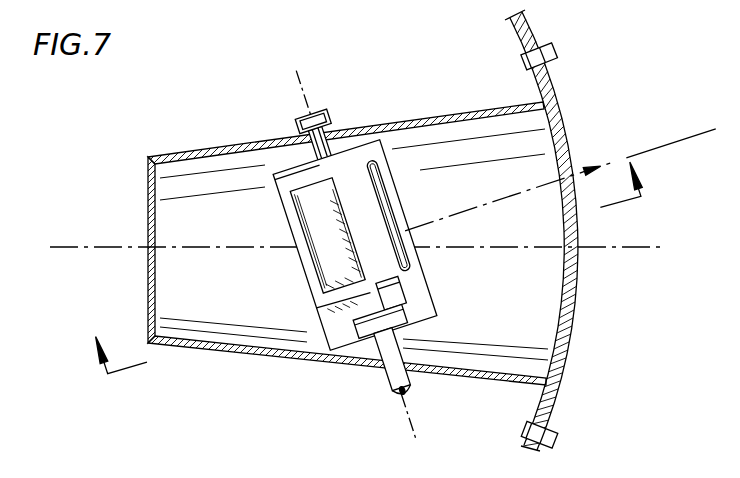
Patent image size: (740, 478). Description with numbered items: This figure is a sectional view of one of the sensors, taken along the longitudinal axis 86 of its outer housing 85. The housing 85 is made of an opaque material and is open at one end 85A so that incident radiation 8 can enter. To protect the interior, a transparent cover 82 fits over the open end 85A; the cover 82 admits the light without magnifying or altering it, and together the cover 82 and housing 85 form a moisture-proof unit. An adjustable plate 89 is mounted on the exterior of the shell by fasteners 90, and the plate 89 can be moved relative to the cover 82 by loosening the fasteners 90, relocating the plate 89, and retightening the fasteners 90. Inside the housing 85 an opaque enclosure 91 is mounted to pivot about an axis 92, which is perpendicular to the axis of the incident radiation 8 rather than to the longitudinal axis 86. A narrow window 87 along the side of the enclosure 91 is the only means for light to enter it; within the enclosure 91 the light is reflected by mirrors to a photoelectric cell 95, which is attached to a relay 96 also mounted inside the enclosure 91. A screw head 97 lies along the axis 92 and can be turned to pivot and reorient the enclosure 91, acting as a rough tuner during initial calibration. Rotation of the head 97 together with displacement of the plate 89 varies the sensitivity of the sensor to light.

The incident radiation 8 is at (690, 104).
The transparent cover 82 is at (579, 319).
The outer housing 85 is at (402, 118).
The open end 85A is at (580, 134).
The longitudinal axis 86 is at (87, 245).
The narrow window 87 is at (390, 150).
The adjustable plate 89 is at (557, 408).
The fasteners 90 is at (553, 441).
The enclosure 91 is at (409, 197).
The axis 92 is at (297, 70).
The photoelectric cell 95 is at (398, 292).
The relay 96 is at (412, 320).
The screw head 97 is at (393, 398).